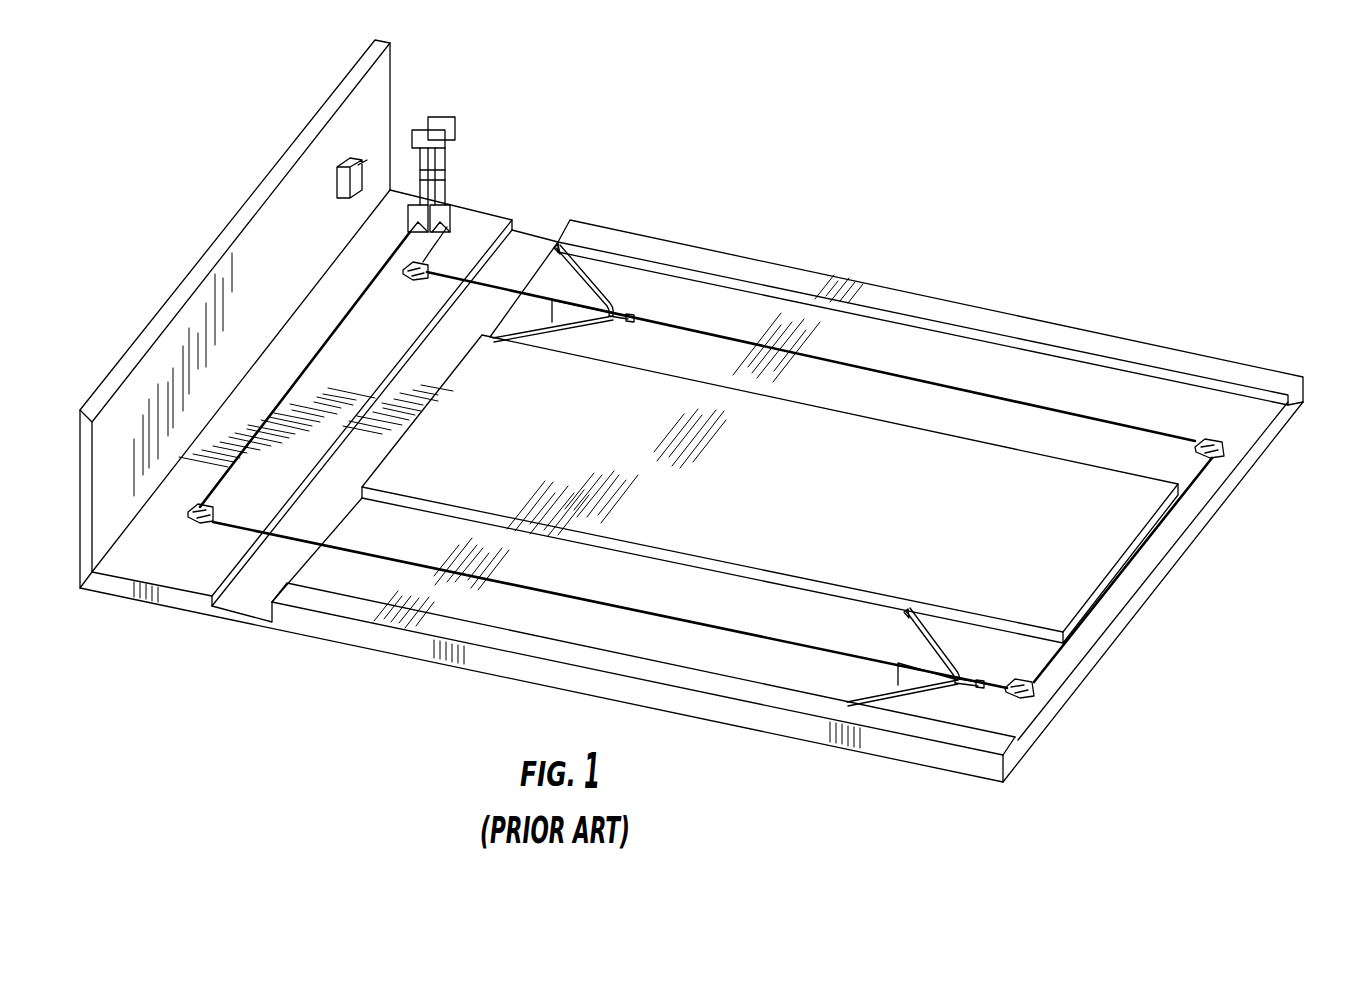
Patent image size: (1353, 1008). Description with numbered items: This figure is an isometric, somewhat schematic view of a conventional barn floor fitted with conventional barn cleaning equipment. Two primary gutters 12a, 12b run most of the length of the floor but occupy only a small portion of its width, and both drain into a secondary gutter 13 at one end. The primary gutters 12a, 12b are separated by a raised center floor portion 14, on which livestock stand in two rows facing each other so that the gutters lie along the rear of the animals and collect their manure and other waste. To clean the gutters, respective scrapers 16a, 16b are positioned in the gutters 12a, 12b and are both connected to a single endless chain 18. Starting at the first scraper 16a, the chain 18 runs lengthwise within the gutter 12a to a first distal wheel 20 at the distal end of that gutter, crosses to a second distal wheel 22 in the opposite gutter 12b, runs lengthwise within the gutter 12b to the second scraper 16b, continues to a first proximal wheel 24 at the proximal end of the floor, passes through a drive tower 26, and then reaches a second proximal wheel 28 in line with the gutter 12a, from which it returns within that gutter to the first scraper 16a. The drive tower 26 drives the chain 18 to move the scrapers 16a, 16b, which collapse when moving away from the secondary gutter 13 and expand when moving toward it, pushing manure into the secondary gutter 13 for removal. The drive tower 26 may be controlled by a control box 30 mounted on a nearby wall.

The primary gutter 12a is at (1042, 697).
The primary gutter 12b is at (1236, 463).
The secondary gutter 13 is at (552, 238).
The raised center floor portion 14 is at (1130, 527).
The scraper 16a is at (895, 675).
The scraper 16b is at (620, 300).
The endless chain 18 is at (915, 372).
The first distal wheel 20 is at (1036, 690).
The second distal wheel 22 is at (1226, 449).
The first proximal wheel 24 is at (430, 260).
The drive tower 26 is at (448, 173).
The second proximal wheel 28 is at (197, 524).
The control box 30 is at (345, 160).